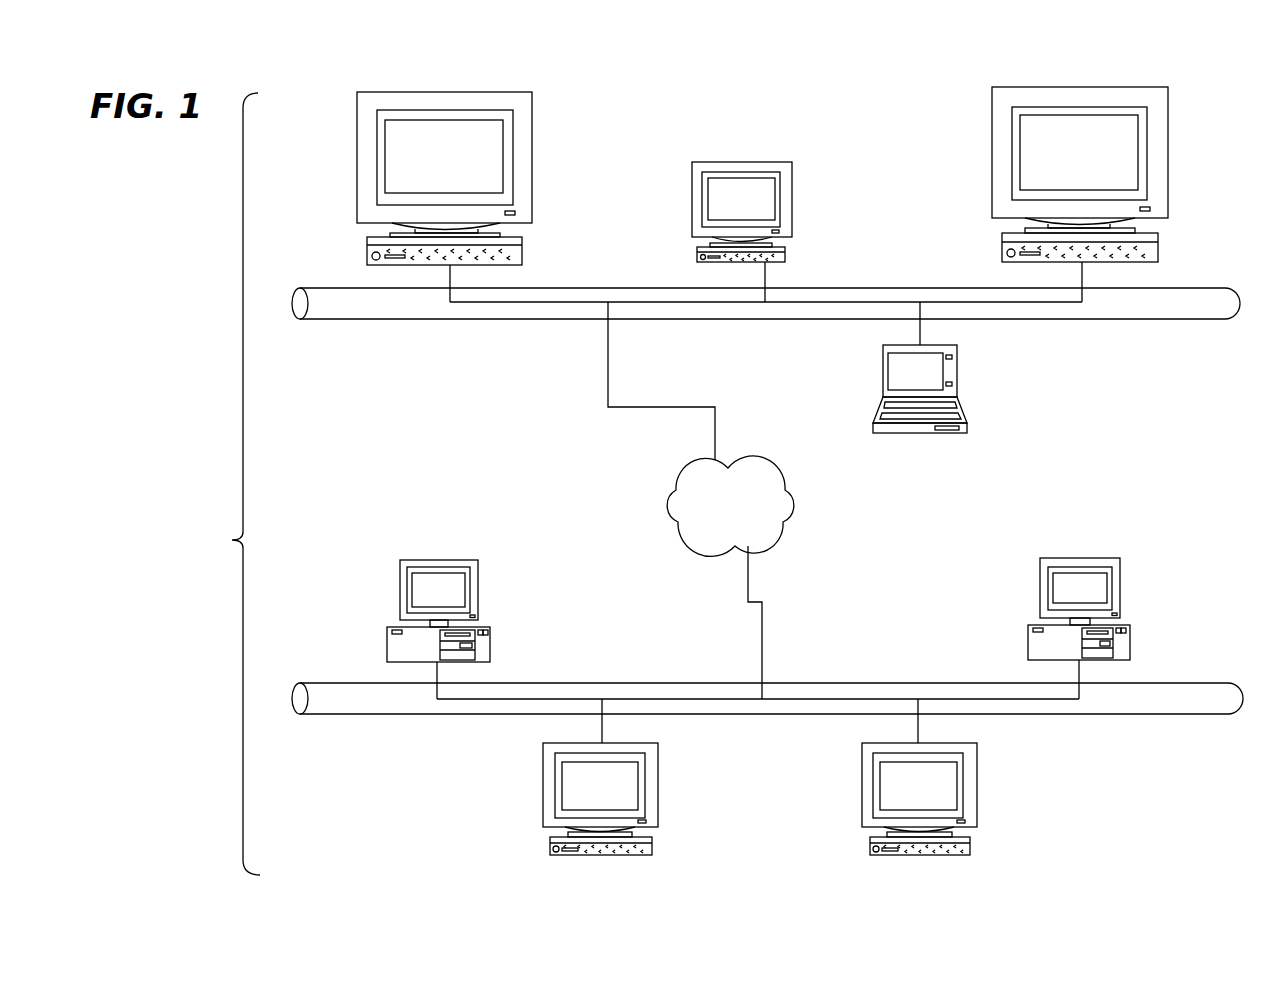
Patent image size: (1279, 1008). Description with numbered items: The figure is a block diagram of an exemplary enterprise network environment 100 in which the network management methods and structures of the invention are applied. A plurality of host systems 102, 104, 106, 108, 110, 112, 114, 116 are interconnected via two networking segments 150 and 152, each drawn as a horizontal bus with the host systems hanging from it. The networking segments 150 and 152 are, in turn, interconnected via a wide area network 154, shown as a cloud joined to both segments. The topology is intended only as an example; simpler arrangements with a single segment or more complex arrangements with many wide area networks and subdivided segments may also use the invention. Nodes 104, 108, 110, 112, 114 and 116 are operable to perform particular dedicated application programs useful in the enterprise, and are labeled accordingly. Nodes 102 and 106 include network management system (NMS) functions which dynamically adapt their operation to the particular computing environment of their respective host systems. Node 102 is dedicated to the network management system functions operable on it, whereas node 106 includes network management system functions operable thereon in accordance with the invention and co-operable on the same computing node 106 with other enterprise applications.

The enterprise network environment 100 is at (224, 484).
The host system 102 is at (532, 125).
The host system 104 is at (792, 173).
The host system 106 is at (1168, 108).
The host system 108 is at (957, 362).
The host system 110 is at (478, 567).
The host system 112 is at (1120, 565).
The host system 114 is at (658, 756).
The host system 116 is at (977, 748).
The networking segment 150 is at (525, 320).
The networking segment 152 is at (627, 683).
The wide area network 154 is at (790, 494).